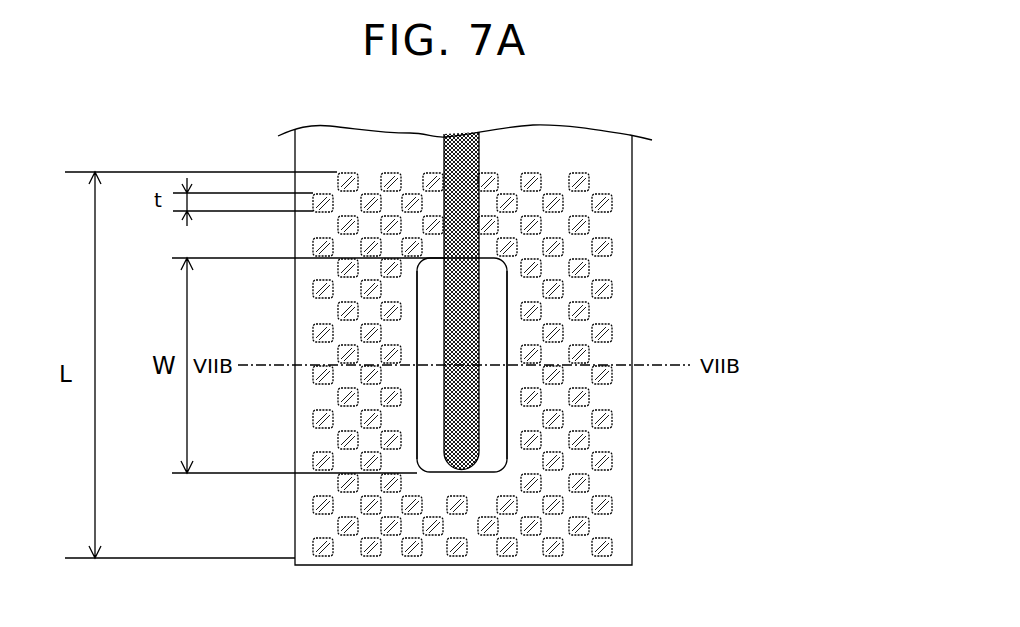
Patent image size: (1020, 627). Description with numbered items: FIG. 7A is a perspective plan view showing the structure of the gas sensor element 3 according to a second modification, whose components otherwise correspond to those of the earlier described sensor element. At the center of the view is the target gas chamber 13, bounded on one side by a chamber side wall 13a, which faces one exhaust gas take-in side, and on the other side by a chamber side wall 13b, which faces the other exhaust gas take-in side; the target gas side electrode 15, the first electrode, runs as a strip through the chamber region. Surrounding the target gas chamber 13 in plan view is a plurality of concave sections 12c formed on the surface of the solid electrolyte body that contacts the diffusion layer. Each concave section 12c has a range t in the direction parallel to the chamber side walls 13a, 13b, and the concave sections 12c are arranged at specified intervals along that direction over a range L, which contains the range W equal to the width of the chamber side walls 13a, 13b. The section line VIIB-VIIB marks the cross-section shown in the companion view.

The gas sensor element 3 is at (726, 172).
The target gas side electrode (first electrode) 15 is at (480, 276).
The target gas chamber 13 is at (592, 365).
The chamber side wall 13a is at (417, 328).
The chamber side wall 13b is at (507, 404).
The concave sections 12c is at (607, 462).